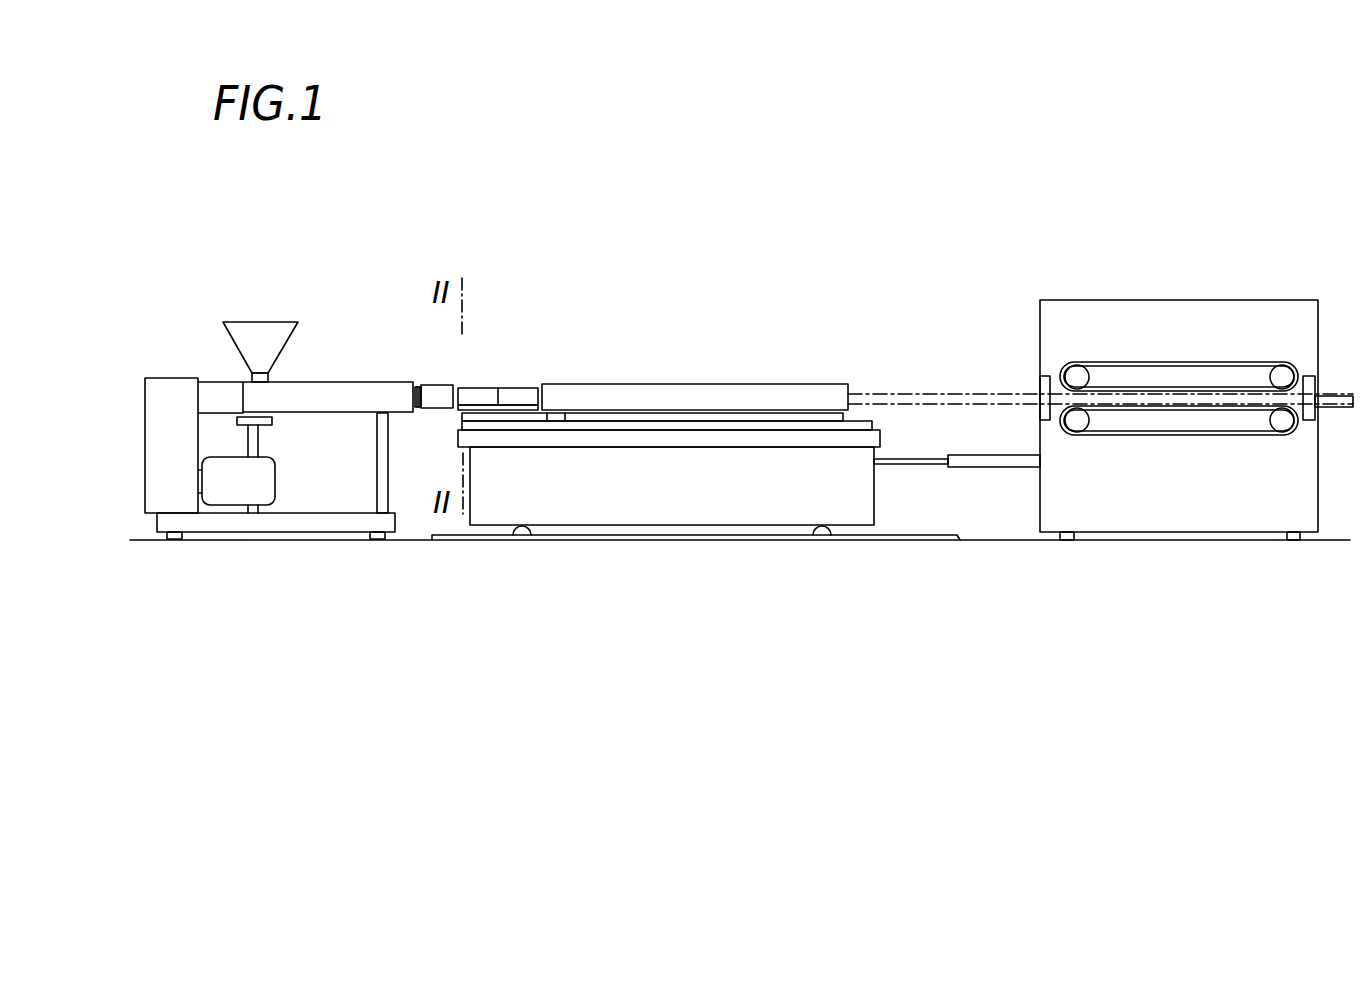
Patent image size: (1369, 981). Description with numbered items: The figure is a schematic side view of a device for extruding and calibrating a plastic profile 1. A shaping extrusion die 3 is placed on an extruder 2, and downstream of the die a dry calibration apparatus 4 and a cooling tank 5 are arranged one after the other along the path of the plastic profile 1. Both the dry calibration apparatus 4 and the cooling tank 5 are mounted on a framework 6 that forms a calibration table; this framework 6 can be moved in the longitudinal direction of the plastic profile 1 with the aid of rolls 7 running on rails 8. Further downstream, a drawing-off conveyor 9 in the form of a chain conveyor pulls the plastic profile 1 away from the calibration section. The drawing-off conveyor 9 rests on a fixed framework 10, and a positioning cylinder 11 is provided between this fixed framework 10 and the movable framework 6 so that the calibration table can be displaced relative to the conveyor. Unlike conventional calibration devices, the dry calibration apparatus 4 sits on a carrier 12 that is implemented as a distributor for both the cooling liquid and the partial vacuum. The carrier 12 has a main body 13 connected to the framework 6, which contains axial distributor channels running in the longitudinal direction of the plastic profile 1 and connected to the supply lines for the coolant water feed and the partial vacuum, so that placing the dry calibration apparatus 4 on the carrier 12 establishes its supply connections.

The plastic profile 1 is at (927, 395).
The extruder 2 is at (333, 395).
The shaping extrusion die 3 is at (435, 395).
The dry calibration apparatus 4 is at (490, 395).
The cooling tank 5 is at (648, 395).
The framework 6 is at (687, 498).
The rolls 7 is at (522, 535).
The rails 8 is at (520, 405).
The drawing-off conveyor 9 is at (1150, 362).
The fixed framework 10 is at (1170, 510).
The positioning cylinder 11 is at (987, 468).
The carrier 12 is at (493, 427).
The main body 13 is at (533, 415).